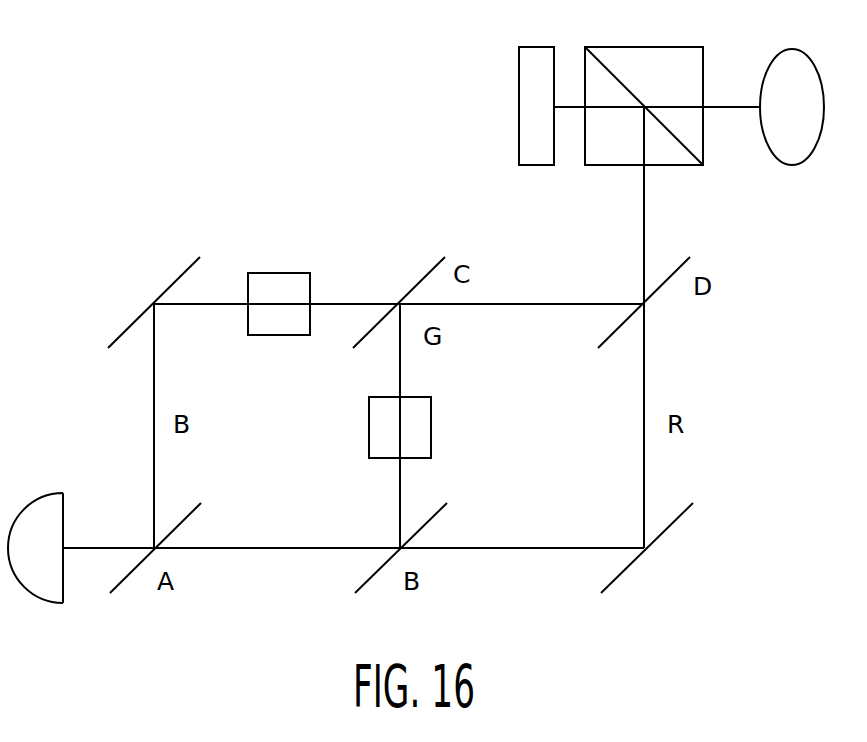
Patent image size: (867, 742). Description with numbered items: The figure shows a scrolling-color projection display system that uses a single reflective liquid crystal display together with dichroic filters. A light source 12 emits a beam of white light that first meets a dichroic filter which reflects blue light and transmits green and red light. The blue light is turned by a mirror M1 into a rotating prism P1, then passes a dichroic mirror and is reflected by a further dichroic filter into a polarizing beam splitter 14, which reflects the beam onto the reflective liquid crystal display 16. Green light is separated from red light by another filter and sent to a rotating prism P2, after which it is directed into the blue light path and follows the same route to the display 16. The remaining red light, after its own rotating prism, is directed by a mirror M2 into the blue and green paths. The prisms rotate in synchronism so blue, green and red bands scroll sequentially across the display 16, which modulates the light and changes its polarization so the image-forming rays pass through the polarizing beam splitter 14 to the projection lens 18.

The light source 12 is at (27, 596).
The polarizing beam splitter 14 is at (687, 47).
The reflective liquid crystal display 16 is at (519, 85).
The projection lens 18 is at (776, 163).
The mirror M1 is at (154, 297).
The mirror M2 is at (648, 548).
The rotating prism P1 is at (291, 280).
The rotating prism P2 is at (421, 427).